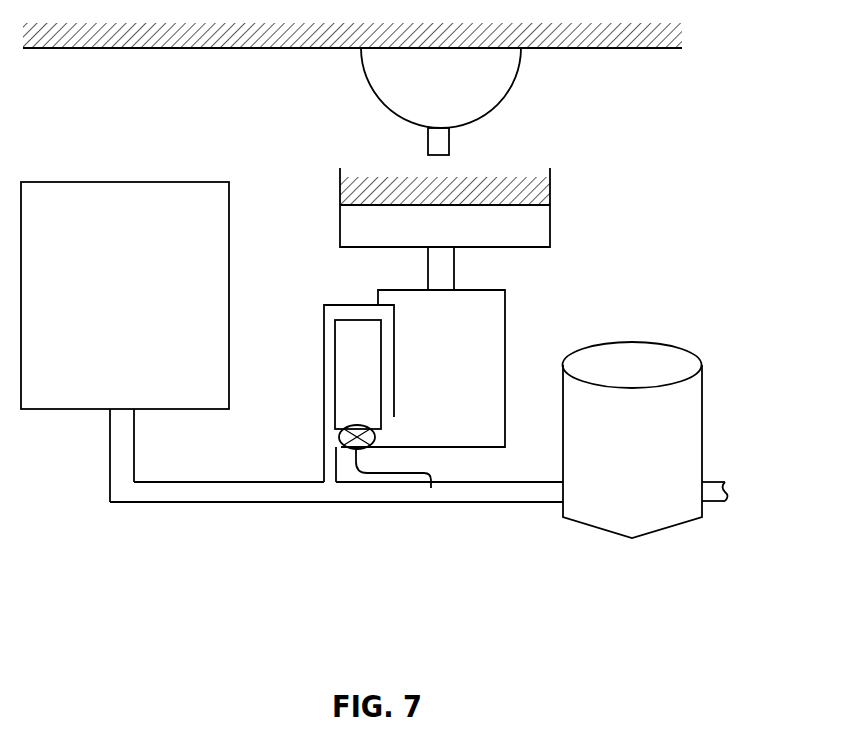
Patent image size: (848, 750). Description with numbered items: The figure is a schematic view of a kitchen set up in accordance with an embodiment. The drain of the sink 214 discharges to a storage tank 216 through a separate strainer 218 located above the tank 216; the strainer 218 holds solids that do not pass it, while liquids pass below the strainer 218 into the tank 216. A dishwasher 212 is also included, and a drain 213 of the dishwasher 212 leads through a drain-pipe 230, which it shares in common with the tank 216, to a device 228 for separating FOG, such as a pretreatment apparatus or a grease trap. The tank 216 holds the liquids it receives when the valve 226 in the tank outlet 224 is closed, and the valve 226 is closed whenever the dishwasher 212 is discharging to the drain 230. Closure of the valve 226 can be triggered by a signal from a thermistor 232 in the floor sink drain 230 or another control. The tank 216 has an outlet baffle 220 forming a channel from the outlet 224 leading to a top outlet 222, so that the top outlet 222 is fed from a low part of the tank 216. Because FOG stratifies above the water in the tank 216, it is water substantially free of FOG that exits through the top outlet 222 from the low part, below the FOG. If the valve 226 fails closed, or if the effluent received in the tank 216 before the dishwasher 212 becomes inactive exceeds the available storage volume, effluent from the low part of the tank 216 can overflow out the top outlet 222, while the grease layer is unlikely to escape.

The dishwasher 212 is at (143, 308).
The drain of the dishwasher 213 is at (117, 457).
The sink 214 is at (492, 76).
The storage tank 216 is at (492, 312).
The strainer 218 is at (543, 210).
The outlet baffle 220 is at (388, 350).
The top outlet 222 is at (378, 313).
The tank outlet 224 is at (386, 436).
The valve 226 is at (340, 430).
The device for separating FOG 228 is at (703, 412).
The drain-pipe 230 is at (263, 492).
The thermistor 232 is at (435, 485).